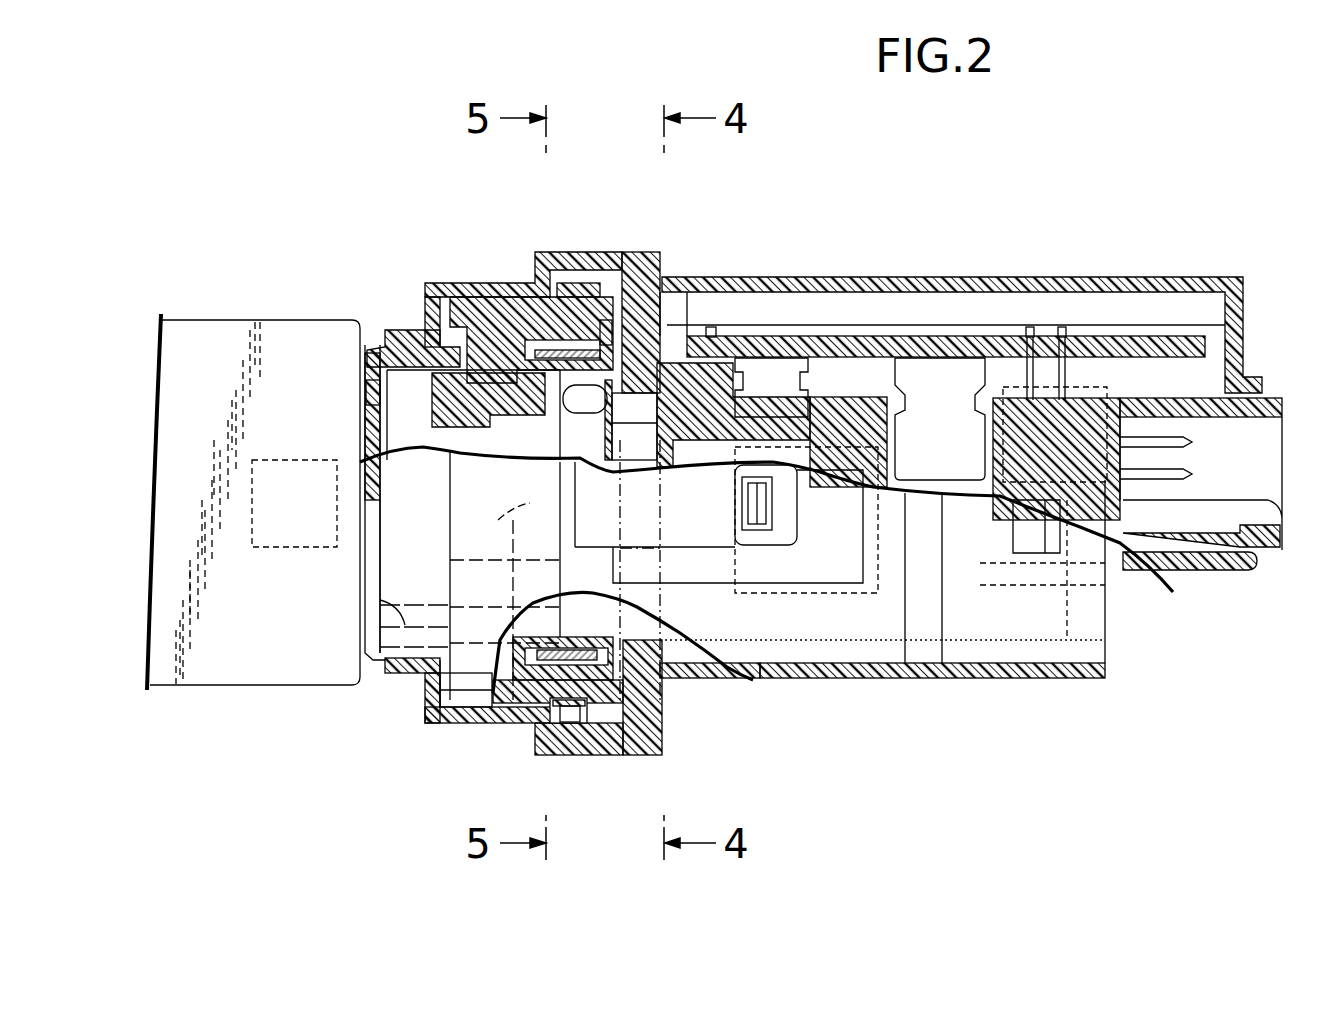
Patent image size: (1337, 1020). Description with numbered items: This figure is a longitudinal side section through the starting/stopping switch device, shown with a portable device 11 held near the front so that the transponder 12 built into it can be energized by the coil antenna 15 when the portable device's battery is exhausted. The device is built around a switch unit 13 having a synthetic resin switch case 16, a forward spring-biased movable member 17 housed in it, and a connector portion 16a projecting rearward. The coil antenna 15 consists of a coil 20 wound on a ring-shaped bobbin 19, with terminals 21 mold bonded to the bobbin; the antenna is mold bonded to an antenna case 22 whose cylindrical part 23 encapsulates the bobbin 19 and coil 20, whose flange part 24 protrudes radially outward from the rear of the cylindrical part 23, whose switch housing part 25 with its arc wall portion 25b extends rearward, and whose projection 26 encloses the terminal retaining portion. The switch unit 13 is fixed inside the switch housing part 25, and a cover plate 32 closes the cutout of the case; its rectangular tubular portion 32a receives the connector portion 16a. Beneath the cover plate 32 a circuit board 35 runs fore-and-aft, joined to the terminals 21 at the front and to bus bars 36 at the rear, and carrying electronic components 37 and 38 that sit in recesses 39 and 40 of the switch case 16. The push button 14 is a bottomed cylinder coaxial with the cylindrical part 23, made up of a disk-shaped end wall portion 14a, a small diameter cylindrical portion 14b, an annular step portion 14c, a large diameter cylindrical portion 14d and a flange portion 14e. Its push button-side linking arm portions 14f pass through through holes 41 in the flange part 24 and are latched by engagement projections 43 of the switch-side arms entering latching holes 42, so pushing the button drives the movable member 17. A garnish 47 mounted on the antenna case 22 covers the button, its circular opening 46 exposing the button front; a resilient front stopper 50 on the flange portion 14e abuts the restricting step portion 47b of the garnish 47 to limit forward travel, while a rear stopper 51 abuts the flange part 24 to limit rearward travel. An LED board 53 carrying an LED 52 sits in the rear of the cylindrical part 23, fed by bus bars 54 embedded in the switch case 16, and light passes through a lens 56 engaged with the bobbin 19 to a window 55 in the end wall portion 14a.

The portable device 11 is at (213, 335).
The transponder 12 is at (290, 462).
The switch unit 13 is at (862, 393).
The push button 14 is at (370, 658).
The end wall portion 14a is at (365, 552).
The small diameter cylindrical portion 14b is at (410, 348).
The step portion 14c is at (425, 685).
The large diameter cylindrical portion 14d is at (460, 690).
The flange portion 14e is at (565, 728).
The push button-side linking arm portion 14f is at (688, 533).
The coil antenna 15 is at (590, 330).
The switch case 16 is at (825, 400).
The connector portion 16a is at (1200, 392).
The movable member 17 is at (787, 595).
The bobbin 19 is at (560, 390).
The coil 20 is at (510, 345).
The terminal 21 is at (710, 335).
The antenna case 22 is at (872, 680).
The cylindrical part 23 is at (435, 305).
The flange part 24 is at (640, 745).
The switch housing part 25 is at (925, 680).
The arc wall portion 25b is at (715, 680).
The projection 26 is at (680, 350).
The cover plate 32 is at (945, 280).
The tubular portion 32a is at (1215, 575).
The circuit board 35 is at (900, 345).
The bus bar 36 is at (1062, 335).
The electronic component 37 is at (720, 440).
The electronic component 38 is at (917, 458).
The recess 39 is at (750, 395).
The recess 40 is at (975, 390).
The through hole 41 is at (640, 548).
The latching hole 42 is at (760, 485).
The engagement projection 43 is at (768, 510).
The circular opening 46 is at (400, 660).
The garnish 47 is at (455, 290).
The restricting step portion 47b is at (570, 283).
The front stopper 50 is at (545, 703).
The rear stopper 51 is at (590, 722).
The LED 52 is at (590, 403).
The LED board 53 is at (570, 470).
The bus bar 54 is at (641, 570).
The window 55 is at (368, 395).
The lens 56 is at (440, 425).